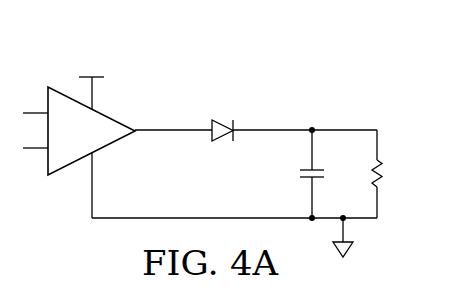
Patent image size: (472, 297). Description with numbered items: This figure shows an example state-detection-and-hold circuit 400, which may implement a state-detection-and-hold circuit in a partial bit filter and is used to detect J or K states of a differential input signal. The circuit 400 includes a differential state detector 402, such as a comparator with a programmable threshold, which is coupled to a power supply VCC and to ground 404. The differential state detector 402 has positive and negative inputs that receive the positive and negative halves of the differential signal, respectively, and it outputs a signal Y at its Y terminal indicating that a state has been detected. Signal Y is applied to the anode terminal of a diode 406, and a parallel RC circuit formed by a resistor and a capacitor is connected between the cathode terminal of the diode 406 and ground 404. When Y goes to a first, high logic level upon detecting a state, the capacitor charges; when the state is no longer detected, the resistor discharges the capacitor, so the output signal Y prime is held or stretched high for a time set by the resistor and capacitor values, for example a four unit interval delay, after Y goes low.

The state-detection-and-hold circuit 400 is at (220, 149).
The differential state detector with programmable threshold 402 is at (113, 143).
The ground 404 is at (349, 252).
The diode 406 is at (227, 118).